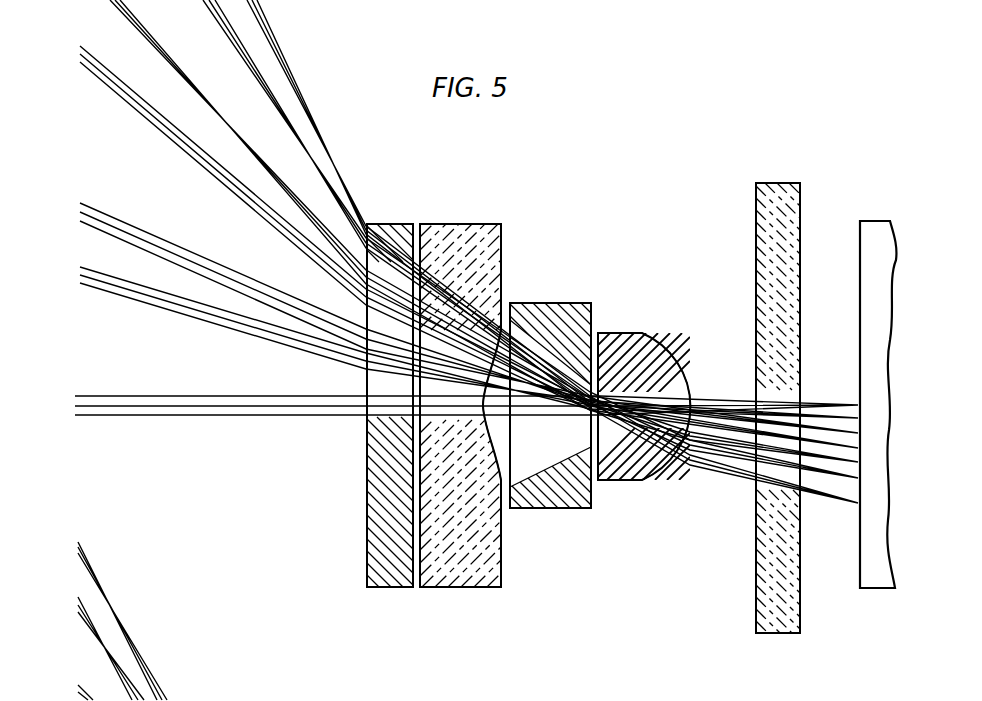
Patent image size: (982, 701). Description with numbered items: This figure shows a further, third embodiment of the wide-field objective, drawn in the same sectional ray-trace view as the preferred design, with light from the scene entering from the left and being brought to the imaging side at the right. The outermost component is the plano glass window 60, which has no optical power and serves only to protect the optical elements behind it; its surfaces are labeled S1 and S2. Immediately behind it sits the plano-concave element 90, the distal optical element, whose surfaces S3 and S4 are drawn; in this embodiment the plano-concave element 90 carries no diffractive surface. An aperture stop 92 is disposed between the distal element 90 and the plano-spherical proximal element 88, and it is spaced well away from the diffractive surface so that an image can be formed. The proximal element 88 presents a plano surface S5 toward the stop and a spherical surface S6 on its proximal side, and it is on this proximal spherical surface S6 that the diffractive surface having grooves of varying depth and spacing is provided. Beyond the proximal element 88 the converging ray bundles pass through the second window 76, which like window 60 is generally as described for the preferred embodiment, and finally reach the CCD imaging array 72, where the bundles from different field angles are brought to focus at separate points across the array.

The plano glass window 60 is at (386, 224).
The plano-concave element 90 is at (445, 224).
The aperture stop 92 is at (535, 303).
The plano-spherical proximal element 88 is at (640, 333).
The window 76 is at (768, 183).
The CCD imaging array 72 is at (860, 221).
The first optical surface S1 is at (367, 458).
The second optical surface S2 is at (412, 490).
The third optical surface S3 is at (424, 545).
The fourth optical surface S4 is at (486, 478).
The fifth optical surface S5 is at (611, 333).
The proximal spherical surface S6 is at (676, 352).